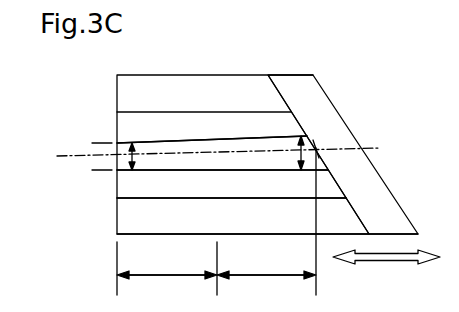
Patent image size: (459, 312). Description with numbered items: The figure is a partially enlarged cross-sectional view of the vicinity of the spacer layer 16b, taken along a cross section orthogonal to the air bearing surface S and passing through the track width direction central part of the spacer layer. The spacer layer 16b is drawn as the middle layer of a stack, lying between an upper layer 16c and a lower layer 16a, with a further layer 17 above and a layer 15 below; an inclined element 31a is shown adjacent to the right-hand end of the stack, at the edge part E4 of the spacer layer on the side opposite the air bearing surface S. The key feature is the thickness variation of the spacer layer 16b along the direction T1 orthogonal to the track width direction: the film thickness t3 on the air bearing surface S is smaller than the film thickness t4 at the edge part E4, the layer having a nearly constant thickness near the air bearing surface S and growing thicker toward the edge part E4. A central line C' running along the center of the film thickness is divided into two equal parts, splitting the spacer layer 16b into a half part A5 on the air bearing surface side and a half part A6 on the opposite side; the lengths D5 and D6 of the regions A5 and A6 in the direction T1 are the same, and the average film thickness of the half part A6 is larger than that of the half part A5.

The upper cover layer 17 is at (147, 86).
The upper layer of reinforcing body 16c is at (147, 119).
The spacer layer 16b is at (215, 153).
The lower layer of reinforcing body 16a is at (147, 182).
The lower cover layer 15 is at (147, 215).
The inclined cutting blade 31a is at (314, 77).
The edge part E4 is at (316, 150).
The central line C' is at (221, 152).
The film thickness t3 is at (127, 156).
The film thickness t4 is at (301, 164).
The air bearing surface S is at (118, 277).
The half part A5 is at (167, 268).
The length D5 is at (167, 287).
The half part A6 is at (266, 221).
The length D6 is at (266, 287).
The direction T1 is at (386, 271).